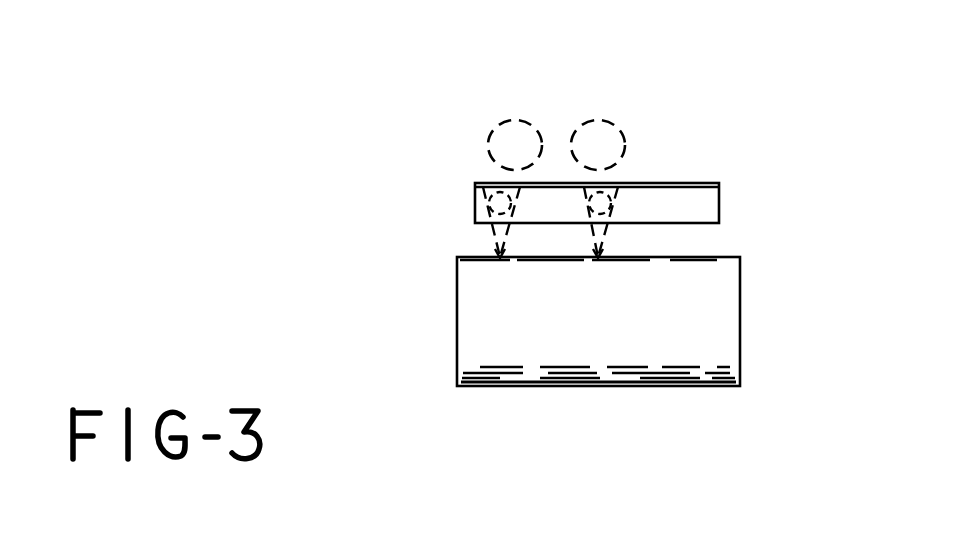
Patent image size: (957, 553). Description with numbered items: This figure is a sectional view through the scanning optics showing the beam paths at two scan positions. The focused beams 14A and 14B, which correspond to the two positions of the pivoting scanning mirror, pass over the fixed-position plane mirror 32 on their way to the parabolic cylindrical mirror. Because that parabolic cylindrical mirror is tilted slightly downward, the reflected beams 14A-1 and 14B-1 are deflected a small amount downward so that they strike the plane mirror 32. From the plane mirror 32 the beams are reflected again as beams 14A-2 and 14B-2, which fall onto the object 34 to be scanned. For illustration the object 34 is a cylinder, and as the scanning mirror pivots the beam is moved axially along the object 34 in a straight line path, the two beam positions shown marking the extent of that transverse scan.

The focused beam 14A is at (604, 120).
The focused beam 14B is at (519, 120).
The beam reflected by parabolic cylindrical mirror 14A-1 is at (626, 183).
The beam reflected by parabolic cylindrical mirror 14B-1 is at (478, 182).
The beam reflected from plane mirror 14A-2 is at (608, 233).
The beam reflected from plane mirror 14B-2 is at (493, 236).
The plane mirror 32 is at (719, 208).
The object 34 is at (740, 338).